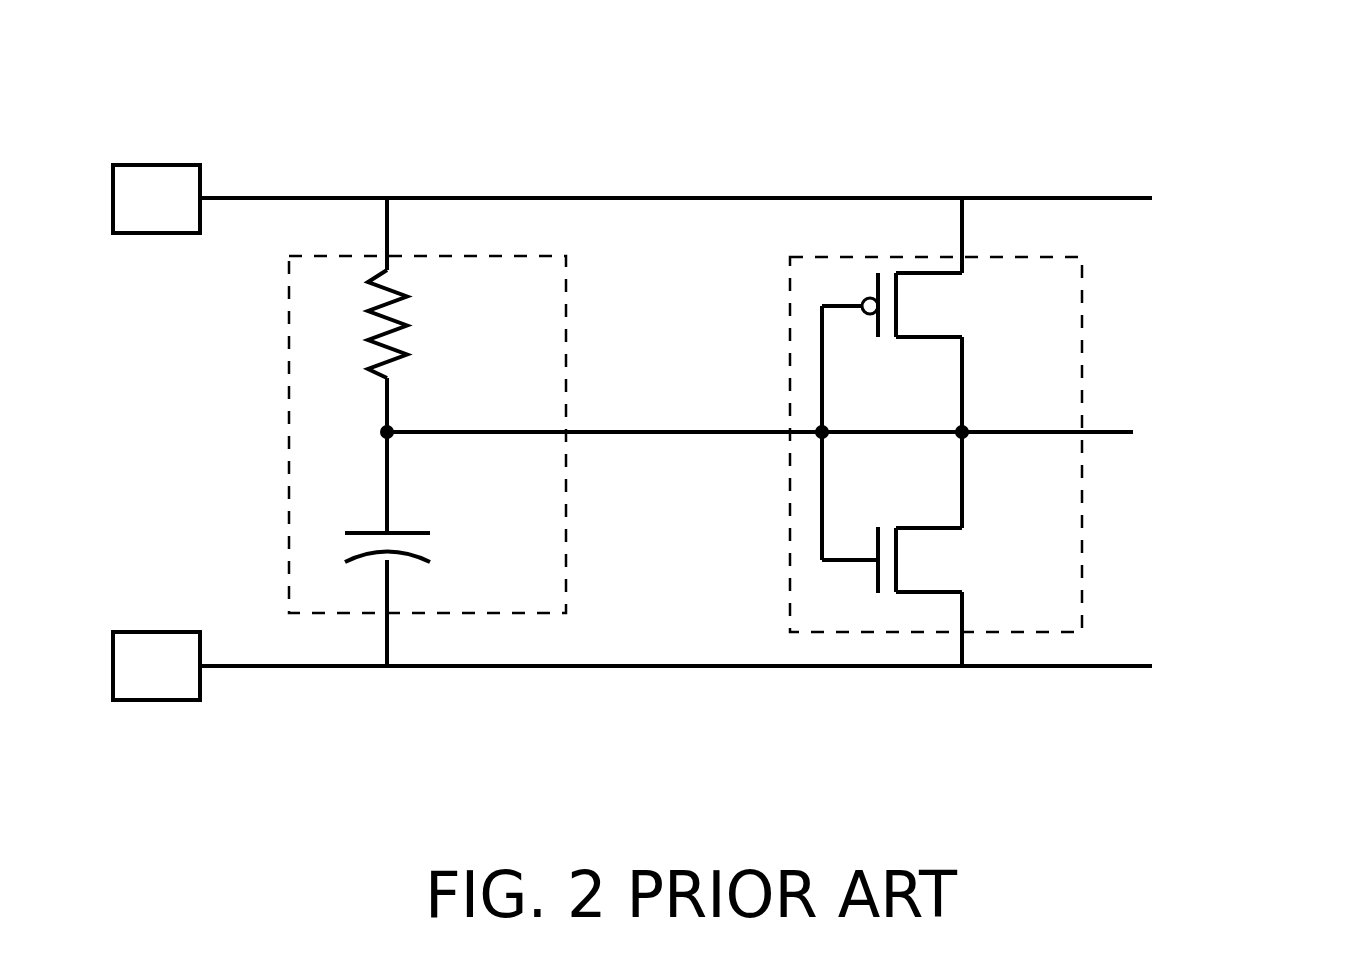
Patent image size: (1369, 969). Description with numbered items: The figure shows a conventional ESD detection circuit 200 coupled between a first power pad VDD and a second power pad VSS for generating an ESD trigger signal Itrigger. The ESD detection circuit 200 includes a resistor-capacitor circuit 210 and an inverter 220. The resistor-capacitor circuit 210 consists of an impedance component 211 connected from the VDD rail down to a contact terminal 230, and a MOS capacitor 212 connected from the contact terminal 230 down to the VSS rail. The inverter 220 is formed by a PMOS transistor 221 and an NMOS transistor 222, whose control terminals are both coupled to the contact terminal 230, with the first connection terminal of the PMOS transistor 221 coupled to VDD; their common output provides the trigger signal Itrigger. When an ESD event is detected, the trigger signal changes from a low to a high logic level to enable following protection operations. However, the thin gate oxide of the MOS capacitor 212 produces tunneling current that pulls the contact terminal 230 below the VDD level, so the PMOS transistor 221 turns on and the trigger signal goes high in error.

The ESD detection circuit 200 is at (730, 365).
The resistor-capacitor circuit 210 is at (443, 409).
The impedance component 211 is at (443, 307).
The MOS capacitor 212 is at (468, 535).
The inverter 220 is at (966, 418).
The PMOS transistor 221 is at (978, 307).
The NMOS transistor 222 is at (977, 560).
The contact terminal 230 is at (399, 425).